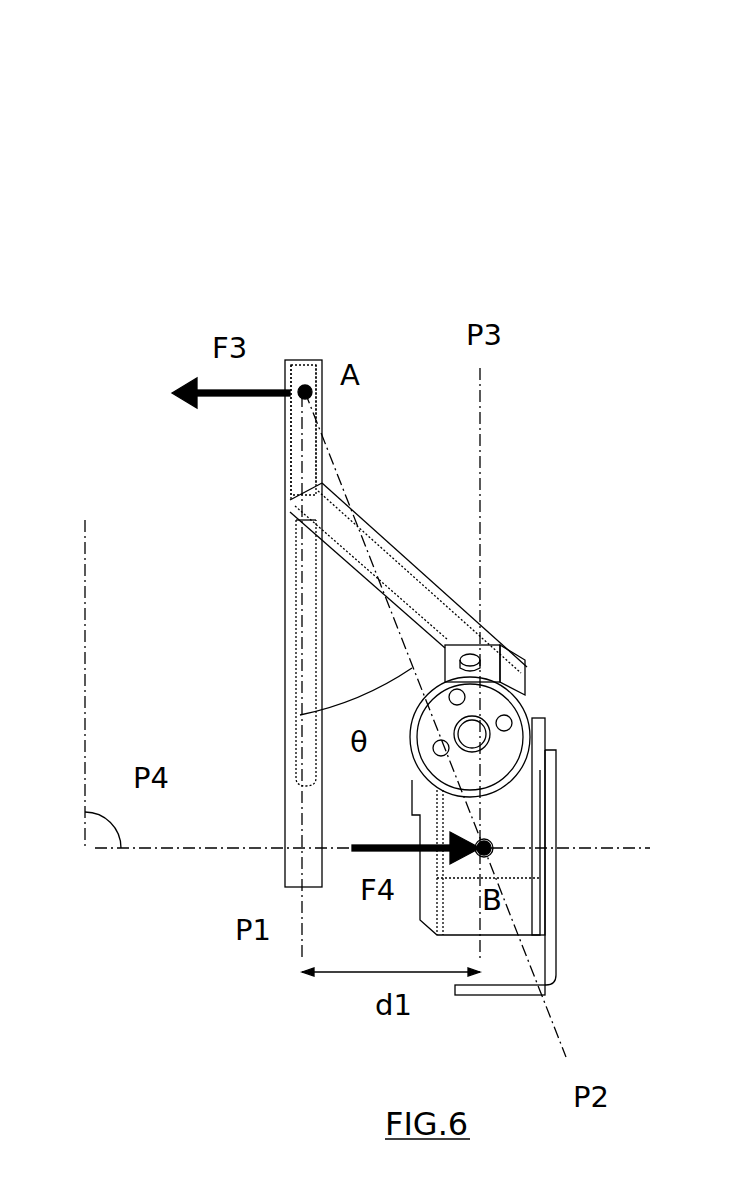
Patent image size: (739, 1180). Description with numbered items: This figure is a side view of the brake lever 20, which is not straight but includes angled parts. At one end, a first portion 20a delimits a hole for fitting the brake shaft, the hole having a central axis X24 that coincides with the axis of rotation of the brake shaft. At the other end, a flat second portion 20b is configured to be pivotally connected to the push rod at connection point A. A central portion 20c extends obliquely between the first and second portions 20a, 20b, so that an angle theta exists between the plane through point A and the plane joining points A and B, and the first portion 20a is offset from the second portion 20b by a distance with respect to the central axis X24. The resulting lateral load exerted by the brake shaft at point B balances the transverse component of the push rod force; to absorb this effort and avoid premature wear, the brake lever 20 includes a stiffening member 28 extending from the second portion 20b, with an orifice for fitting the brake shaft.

The brake lever 20 is at (542, 128).
The first portion 20a is at (515, 812).
The second portion 20b is at (302, 368).
The central portion 20c is at (417, 592).
The stiffening member 28 is at (295, 632).
The central axis X24 is at (547, 830).